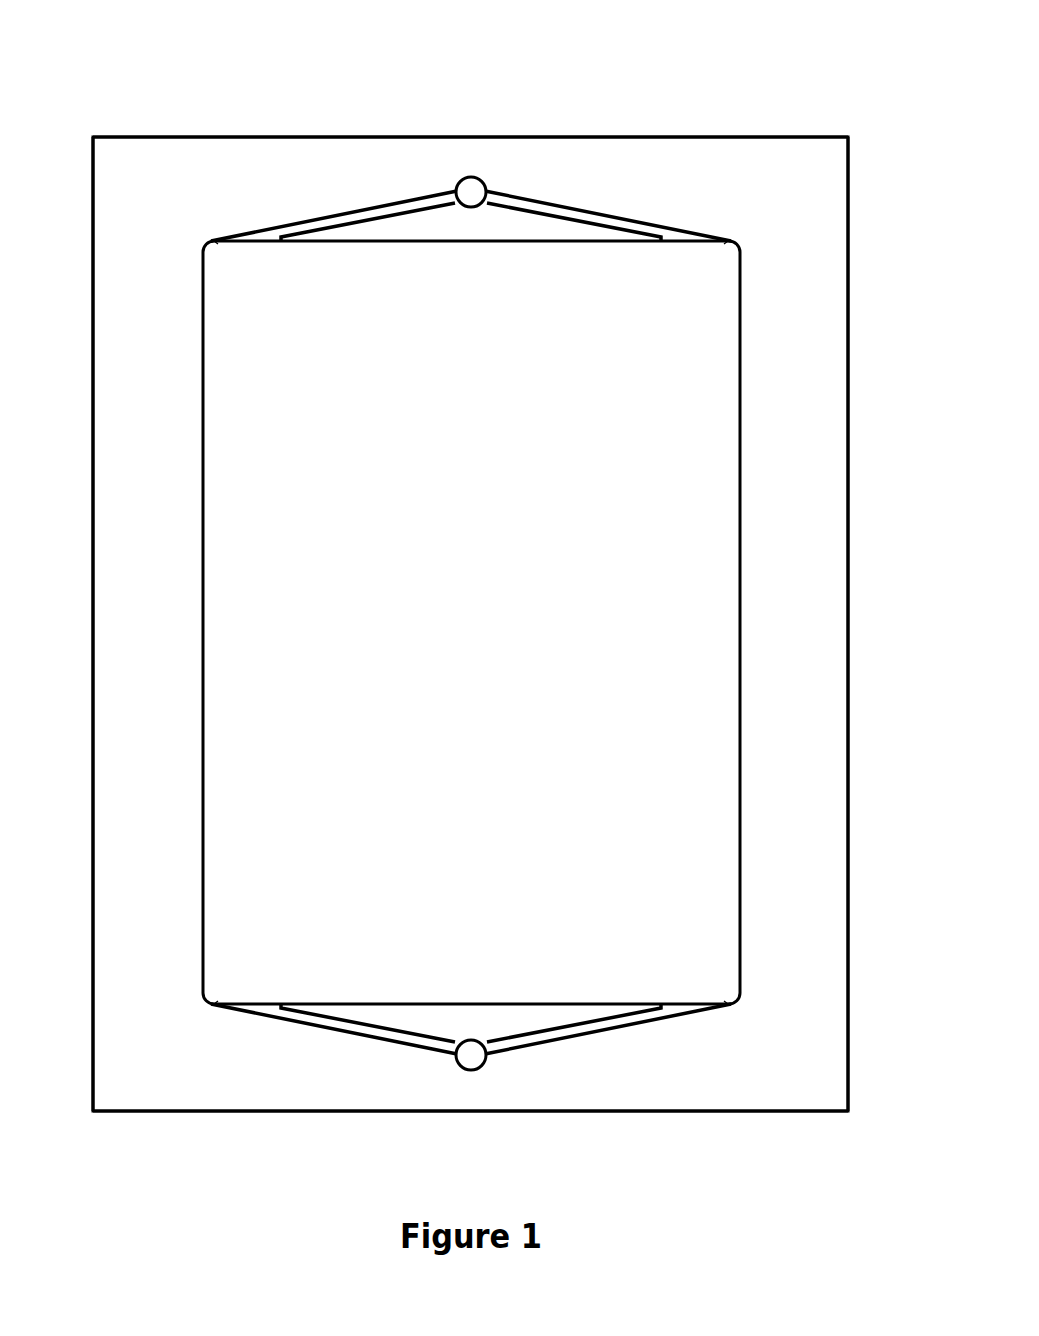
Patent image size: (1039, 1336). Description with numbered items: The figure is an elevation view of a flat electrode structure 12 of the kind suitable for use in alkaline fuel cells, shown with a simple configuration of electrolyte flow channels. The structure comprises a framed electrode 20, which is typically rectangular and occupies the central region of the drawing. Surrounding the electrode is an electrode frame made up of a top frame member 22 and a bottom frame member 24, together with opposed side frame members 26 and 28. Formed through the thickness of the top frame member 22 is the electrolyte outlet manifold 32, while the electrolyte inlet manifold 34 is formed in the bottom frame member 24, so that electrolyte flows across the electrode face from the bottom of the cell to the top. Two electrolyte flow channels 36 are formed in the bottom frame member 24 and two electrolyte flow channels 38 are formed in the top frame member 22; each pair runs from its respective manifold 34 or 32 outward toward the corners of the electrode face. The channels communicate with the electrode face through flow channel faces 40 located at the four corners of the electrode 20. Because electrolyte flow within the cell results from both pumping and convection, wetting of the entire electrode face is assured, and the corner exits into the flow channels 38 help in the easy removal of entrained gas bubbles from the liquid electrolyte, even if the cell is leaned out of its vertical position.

The flat electrode structure 12 is at (153, 112).
The framed electrode 20 is at (480, 629).
The top frame member 22 is at (567, 165).
The bottom frame member 24 is at (570, 1077).
The side frame member 26 is at (150, 563).
The side frame member 28 is at (787, 563).
The electrolyte outlet manifold 32 is at (470, 192).
The electrolyte inlet manifold 34 is at (471, 1055).
The electrolyte flow channels 36 is at (343, 1027).
The electrolyte flow channels 38 is at (330, 220).
The flow channel faces 40 is at (252, 242).